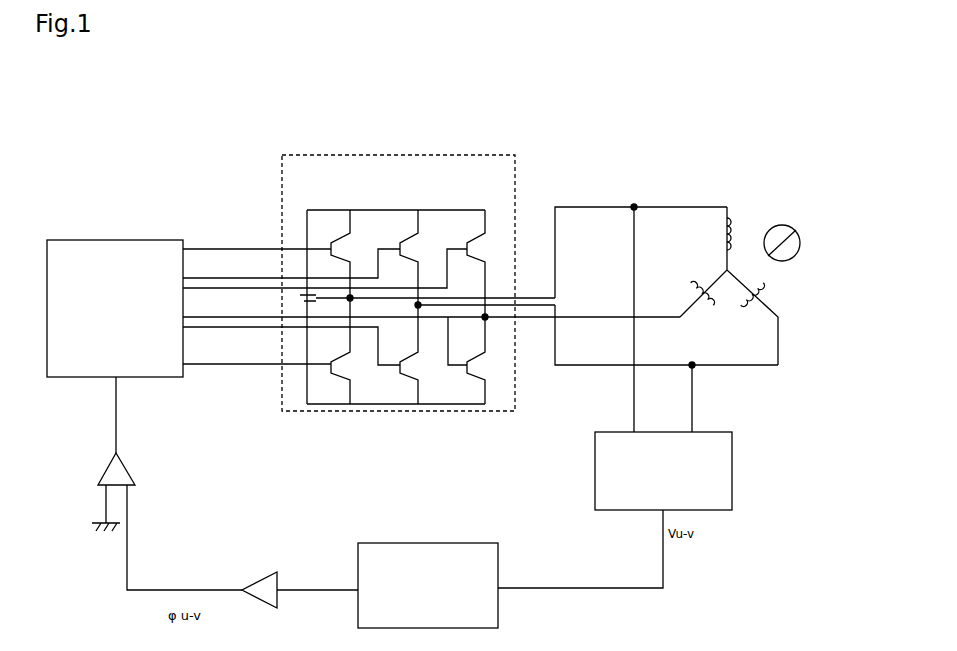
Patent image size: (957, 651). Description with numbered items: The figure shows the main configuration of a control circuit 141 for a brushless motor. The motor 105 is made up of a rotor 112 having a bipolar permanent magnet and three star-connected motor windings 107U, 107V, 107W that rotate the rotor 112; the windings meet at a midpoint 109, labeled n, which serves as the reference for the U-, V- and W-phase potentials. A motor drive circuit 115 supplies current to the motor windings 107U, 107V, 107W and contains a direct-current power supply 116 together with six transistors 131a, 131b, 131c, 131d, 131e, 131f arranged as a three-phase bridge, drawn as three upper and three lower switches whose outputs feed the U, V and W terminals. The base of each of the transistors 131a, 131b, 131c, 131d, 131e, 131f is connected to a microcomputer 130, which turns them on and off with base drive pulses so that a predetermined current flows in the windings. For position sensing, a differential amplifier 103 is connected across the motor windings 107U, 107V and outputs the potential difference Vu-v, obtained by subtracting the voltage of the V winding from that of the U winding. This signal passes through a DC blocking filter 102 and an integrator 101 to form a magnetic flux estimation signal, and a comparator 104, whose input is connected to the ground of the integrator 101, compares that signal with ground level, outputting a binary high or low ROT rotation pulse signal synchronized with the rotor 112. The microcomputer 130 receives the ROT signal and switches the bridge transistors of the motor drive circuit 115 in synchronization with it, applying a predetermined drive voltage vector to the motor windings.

The integrator 101 is at (280, 575).
The DC blocking filter 102 is at (372, 543).
The differential amplifier 103 is at (732, 456).
The comparator 104 is at (130, 469).
The motor 105 is at (794, 163).
The motor winding 107U is at (736, 231).
The motor winding 107V is at (762, 290).
The motor winding 107W is at (705, 303).
The midpoint 109 is at (725, 267).
The rotor 112 is at (790, 227).
The motor drive circuit 115 is at (365, 155).
The direct-current power supply 116 is at (298, 298).
The microcomputer 130 is at (150, 239).
The switching transistor 131a is at (342, 239).
The switching transistor 131b is at (342, 356).
The switching transistor 131c is at (410, 239).
The switching transistor 131d is at (410, 356).
The switching transistor 131e is at (477, 239).
The switching transistor 131f is at (477, 356).
The control circuit 141 is at (539, 133).